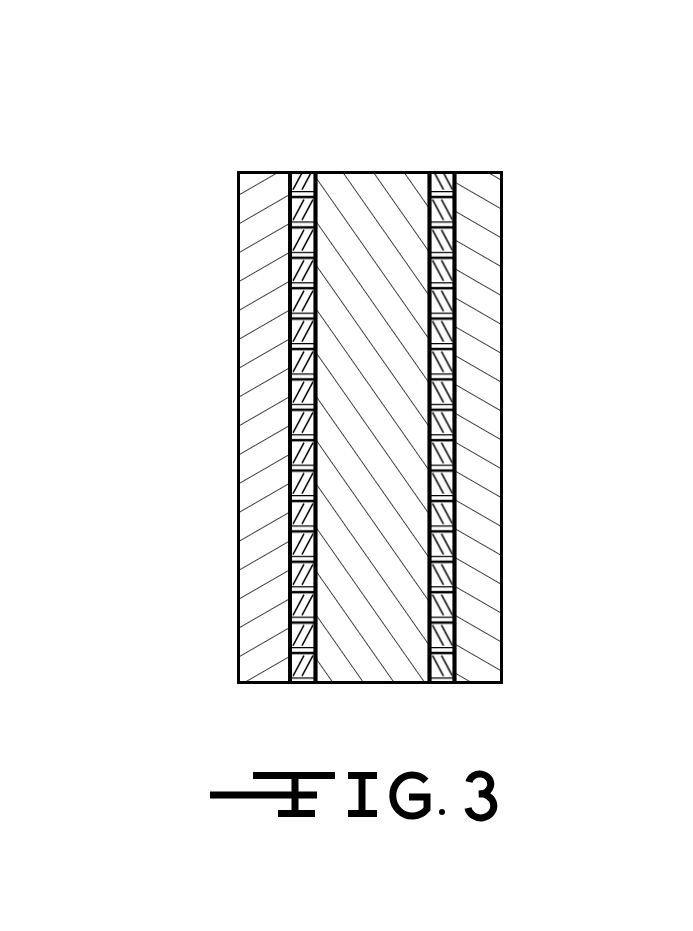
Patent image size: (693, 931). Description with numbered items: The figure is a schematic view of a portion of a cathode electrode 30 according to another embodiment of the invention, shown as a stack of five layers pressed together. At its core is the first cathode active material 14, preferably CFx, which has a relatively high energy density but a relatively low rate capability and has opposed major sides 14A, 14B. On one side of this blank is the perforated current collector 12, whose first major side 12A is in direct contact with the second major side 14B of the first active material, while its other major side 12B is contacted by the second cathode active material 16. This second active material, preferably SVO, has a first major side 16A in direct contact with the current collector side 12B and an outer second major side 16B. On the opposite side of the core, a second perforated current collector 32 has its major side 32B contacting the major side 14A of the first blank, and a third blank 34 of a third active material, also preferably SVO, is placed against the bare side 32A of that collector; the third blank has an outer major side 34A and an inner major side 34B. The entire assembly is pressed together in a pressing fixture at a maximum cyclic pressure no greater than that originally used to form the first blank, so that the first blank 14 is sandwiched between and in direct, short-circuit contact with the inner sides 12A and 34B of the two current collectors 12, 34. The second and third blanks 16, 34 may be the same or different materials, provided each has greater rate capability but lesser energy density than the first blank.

The cathode electrode 30 is at (524, 125).
The perforated current collector 12 is at (298, 180).
The first major current collector side 12A is at (334, 186).
The second major current collector side 12B is at (289, 240).
The first cathode active material 14 is at (400, 590).
The first major side of first cathode active material 14A is at (432, 424).
The second major side of first cathode active material 14B is at (317, 515).
The second cathode active material 16 is at (252, 368).
The first major side of second cathode active material 16A is at (288, 549).
The second major side of second cathode active material 16B is at (238, 472).
The second perforated current collector 32 is at (438, 172).
The bare side of second current collector 32A is at (455, 212).
The major side of second current collector 32B is at (428, 215).
The third blank 34 is at (482, 370).
The first major side of third blank 34A is at (502, 262).
The inner major side of third blank 34B is at (456, 300).